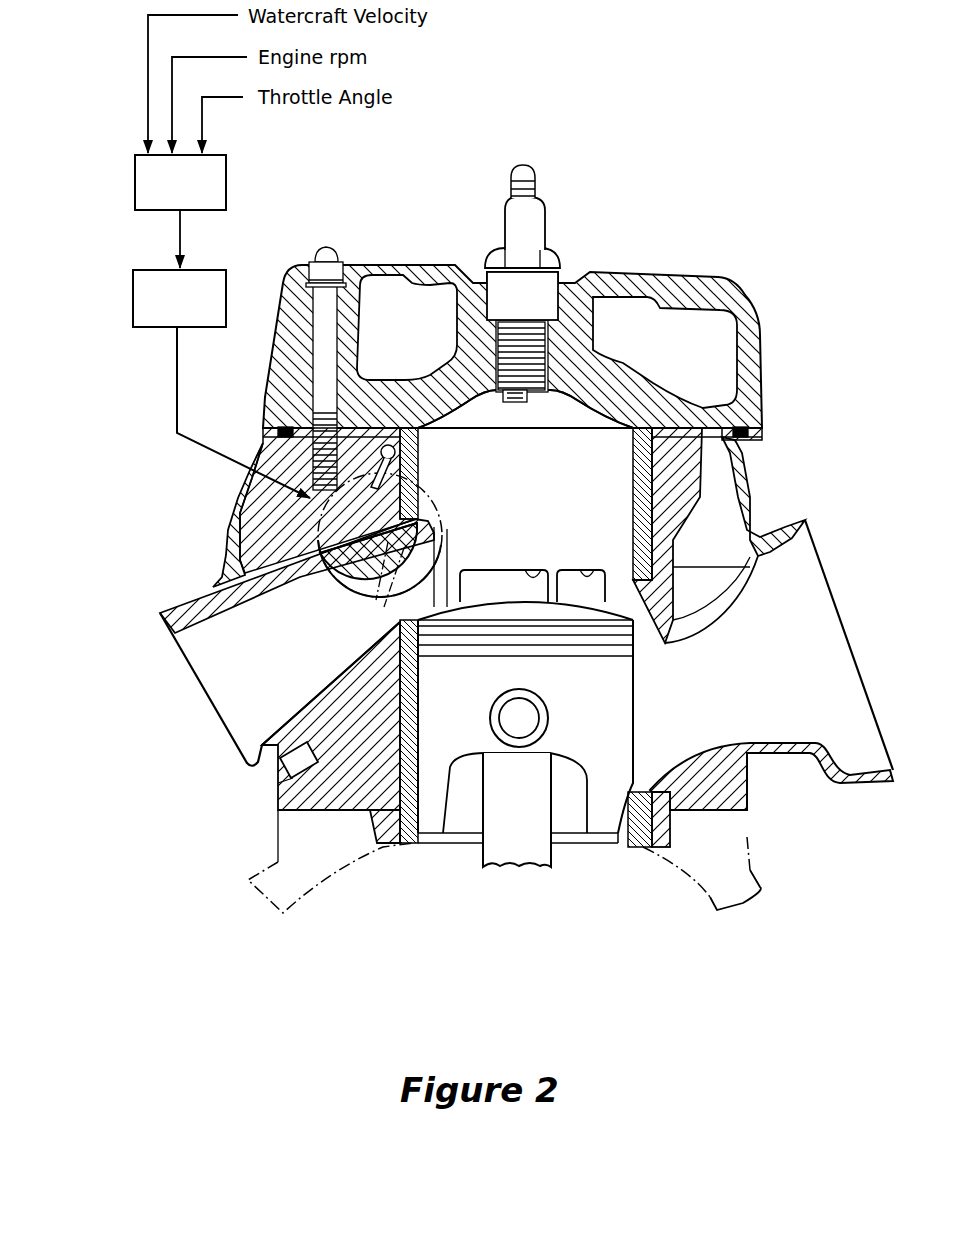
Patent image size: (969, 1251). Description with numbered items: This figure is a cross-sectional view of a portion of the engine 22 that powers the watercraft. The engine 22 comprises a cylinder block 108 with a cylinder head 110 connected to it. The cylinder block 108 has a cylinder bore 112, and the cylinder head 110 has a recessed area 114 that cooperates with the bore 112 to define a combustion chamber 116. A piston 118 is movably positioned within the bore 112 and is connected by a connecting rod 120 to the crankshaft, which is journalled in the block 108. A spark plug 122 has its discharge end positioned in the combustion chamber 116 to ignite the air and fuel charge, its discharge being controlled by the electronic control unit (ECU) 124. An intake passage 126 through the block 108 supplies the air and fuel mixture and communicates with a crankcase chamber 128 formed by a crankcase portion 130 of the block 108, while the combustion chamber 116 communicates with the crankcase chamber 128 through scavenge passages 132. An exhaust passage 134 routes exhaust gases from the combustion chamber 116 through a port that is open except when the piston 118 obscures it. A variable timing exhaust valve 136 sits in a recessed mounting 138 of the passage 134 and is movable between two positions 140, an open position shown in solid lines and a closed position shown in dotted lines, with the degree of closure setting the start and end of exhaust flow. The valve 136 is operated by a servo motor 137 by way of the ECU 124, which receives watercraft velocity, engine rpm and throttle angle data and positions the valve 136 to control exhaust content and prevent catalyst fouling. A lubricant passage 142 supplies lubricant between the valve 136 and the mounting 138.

The engine 22 is at (770, 218).
The cylinder block 108 is at (752, 466).
The cylinder head 110 is at (770, 341).
The cylinder bore 112 is at (633, 478).
The recessed area 114 is at (588, 406).
The combustion chamber 116 is at (562, 417).
The piston 118 is at (585, 812).
The connecting rod 120 is at (463, 860).
The spark plug 122 is at (548, 229).
The electronic control unit (ECU) 124 is at (135, 185).
The intake passage 126 is at (752, 745).
The crankcase chamber 128 is at (683, 897).
The crankcase portion 130 is at (752, 866).
The scavenge passages 132 is at (572, 570).
The exhaust passage 134 is at (247, 742).
The variable timing exhaust valve 136 is at (343, 552).
The servo motor 137 is at (133, 303).
The recessed mounting 138 is at (352, 551).
The positions 140 is at (393, 548).
The lubricant passage 142 is at (418, 452).